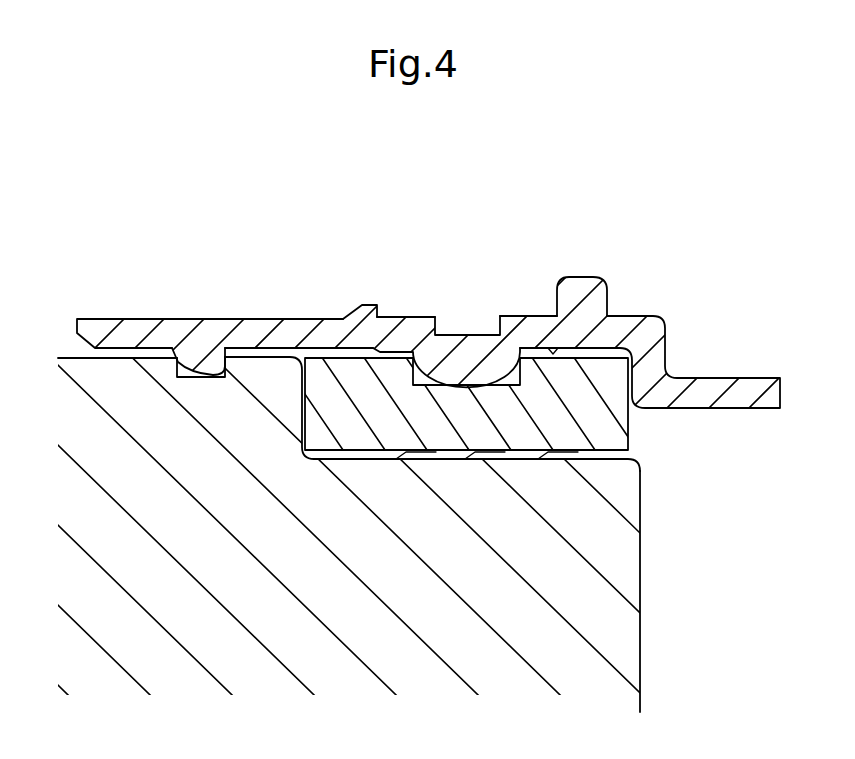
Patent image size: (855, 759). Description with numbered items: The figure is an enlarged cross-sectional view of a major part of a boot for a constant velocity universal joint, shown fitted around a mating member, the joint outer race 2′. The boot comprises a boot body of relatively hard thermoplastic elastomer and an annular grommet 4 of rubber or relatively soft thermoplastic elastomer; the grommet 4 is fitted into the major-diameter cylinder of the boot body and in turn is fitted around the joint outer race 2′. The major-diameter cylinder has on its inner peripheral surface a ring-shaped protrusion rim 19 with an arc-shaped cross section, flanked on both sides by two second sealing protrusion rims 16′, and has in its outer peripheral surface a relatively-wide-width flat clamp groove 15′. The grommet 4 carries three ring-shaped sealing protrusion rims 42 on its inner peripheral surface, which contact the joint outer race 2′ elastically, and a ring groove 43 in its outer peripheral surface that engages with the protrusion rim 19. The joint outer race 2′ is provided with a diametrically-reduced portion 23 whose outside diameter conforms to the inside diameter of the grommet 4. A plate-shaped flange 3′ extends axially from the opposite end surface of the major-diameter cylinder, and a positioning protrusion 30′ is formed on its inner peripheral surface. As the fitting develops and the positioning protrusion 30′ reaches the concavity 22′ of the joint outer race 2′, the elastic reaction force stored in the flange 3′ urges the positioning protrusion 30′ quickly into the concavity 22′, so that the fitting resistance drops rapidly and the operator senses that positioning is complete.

The joint outer race 2′ is at (617, 538).
The plate-shaped flange 3′ is at (140, 320).
The annular grommet 4 is at (612, 418).
The flat clamp groove 15′ is at (397, 313).
The second sealing protrusion rim 16′ is at (570, 348).
The protrusion rim 19 is at (472, 375).
The concavity 22′ is at (237, 385).
The diametrically-reduced portion 23 is at (615, 605).
The positioning protrusion 30′ is at (197, 367).
The sealing protrusion rim 42 is at (592, 477).
The ring groove 43 is at (417, 388).